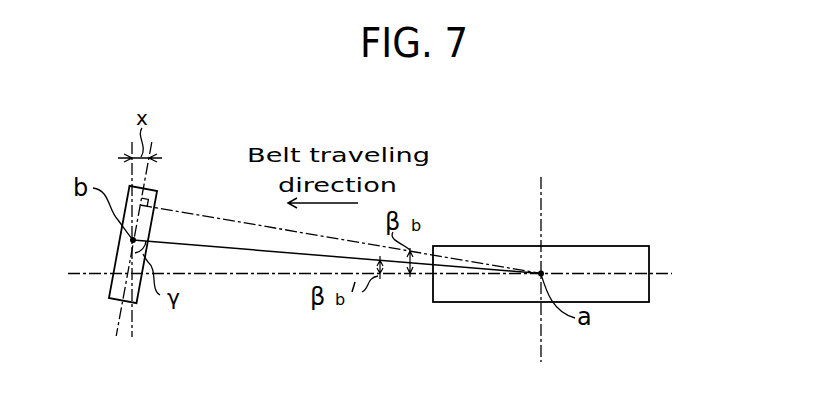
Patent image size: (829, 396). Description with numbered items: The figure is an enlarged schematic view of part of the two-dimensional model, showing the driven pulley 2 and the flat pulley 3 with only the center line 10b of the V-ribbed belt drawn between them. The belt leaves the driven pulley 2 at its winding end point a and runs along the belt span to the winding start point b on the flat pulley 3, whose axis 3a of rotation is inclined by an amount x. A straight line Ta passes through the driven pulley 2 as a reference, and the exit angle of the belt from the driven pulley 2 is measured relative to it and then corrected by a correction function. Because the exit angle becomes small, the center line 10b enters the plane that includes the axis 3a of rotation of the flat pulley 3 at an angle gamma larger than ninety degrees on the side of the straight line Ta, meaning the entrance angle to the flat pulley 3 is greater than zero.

The driven pulley 2 is at (620, 262).
The flat pulley 3 is at (118, 262).
The axis of rotation 3a is at (151, 164).
The center line 10b is at (260, 251).
The straight line Ta is at (662, 268).